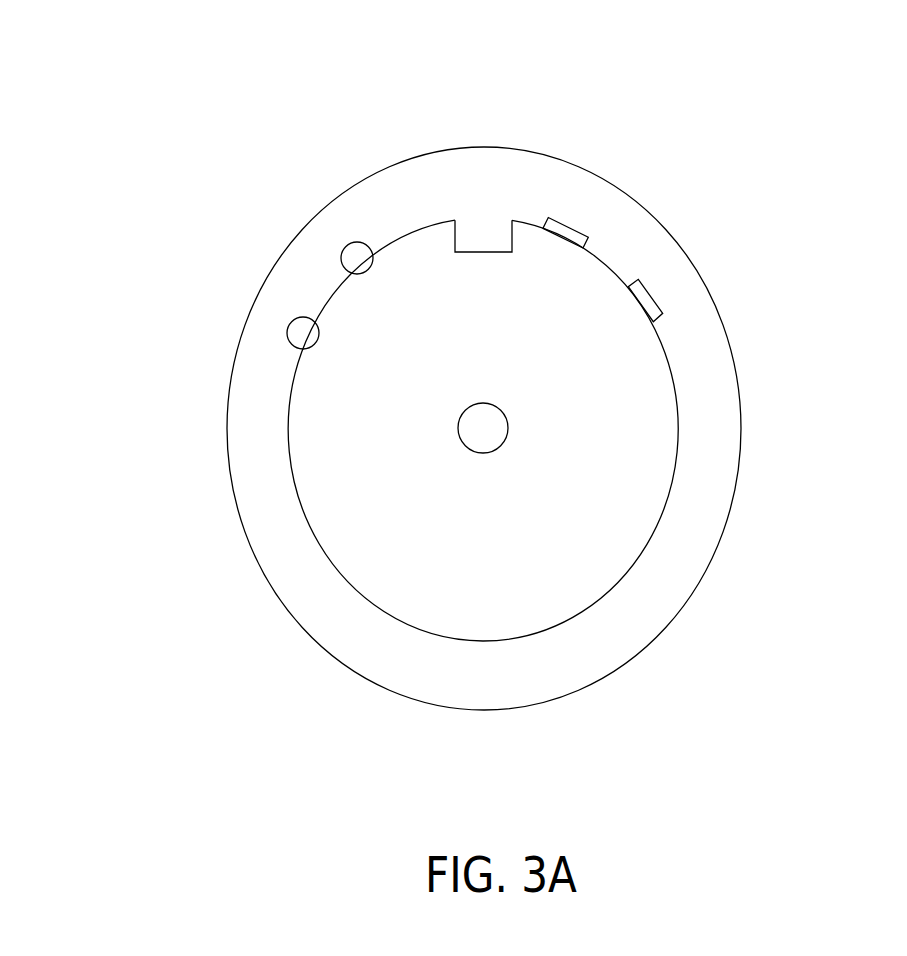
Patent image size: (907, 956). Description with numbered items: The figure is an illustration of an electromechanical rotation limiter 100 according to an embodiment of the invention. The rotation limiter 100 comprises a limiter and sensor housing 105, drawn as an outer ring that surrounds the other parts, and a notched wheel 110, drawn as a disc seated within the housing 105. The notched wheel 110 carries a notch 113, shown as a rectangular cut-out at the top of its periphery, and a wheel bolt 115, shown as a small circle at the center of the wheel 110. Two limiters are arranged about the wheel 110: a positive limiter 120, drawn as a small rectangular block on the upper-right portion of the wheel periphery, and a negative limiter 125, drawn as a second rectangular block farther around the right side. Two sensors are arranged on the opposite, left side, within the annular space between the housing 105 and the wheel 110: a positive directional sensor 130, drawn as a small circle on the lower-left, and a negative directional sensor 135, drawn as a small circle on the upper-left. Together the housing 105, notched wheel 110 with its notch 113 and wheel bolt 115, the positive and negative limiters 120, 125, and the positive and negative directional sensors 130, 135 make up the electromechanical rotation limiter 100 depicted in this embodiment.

The electromechanical rotation limiter 100 is at (827, 128).
The limiter and sensor housing 105 is at (715, 388).
The notched wheel 110 is at (638, 487).
The notch 113 is at (483, 250).
The wheel bolt 115 is at (483, 427).
The positive limiter 120 is at (568, 226).
The negative limiter 125 is at (653, 294).
The positive directional sensor 130 is at (290, 322).
The negative directional sensor 135 is at (345, 248).